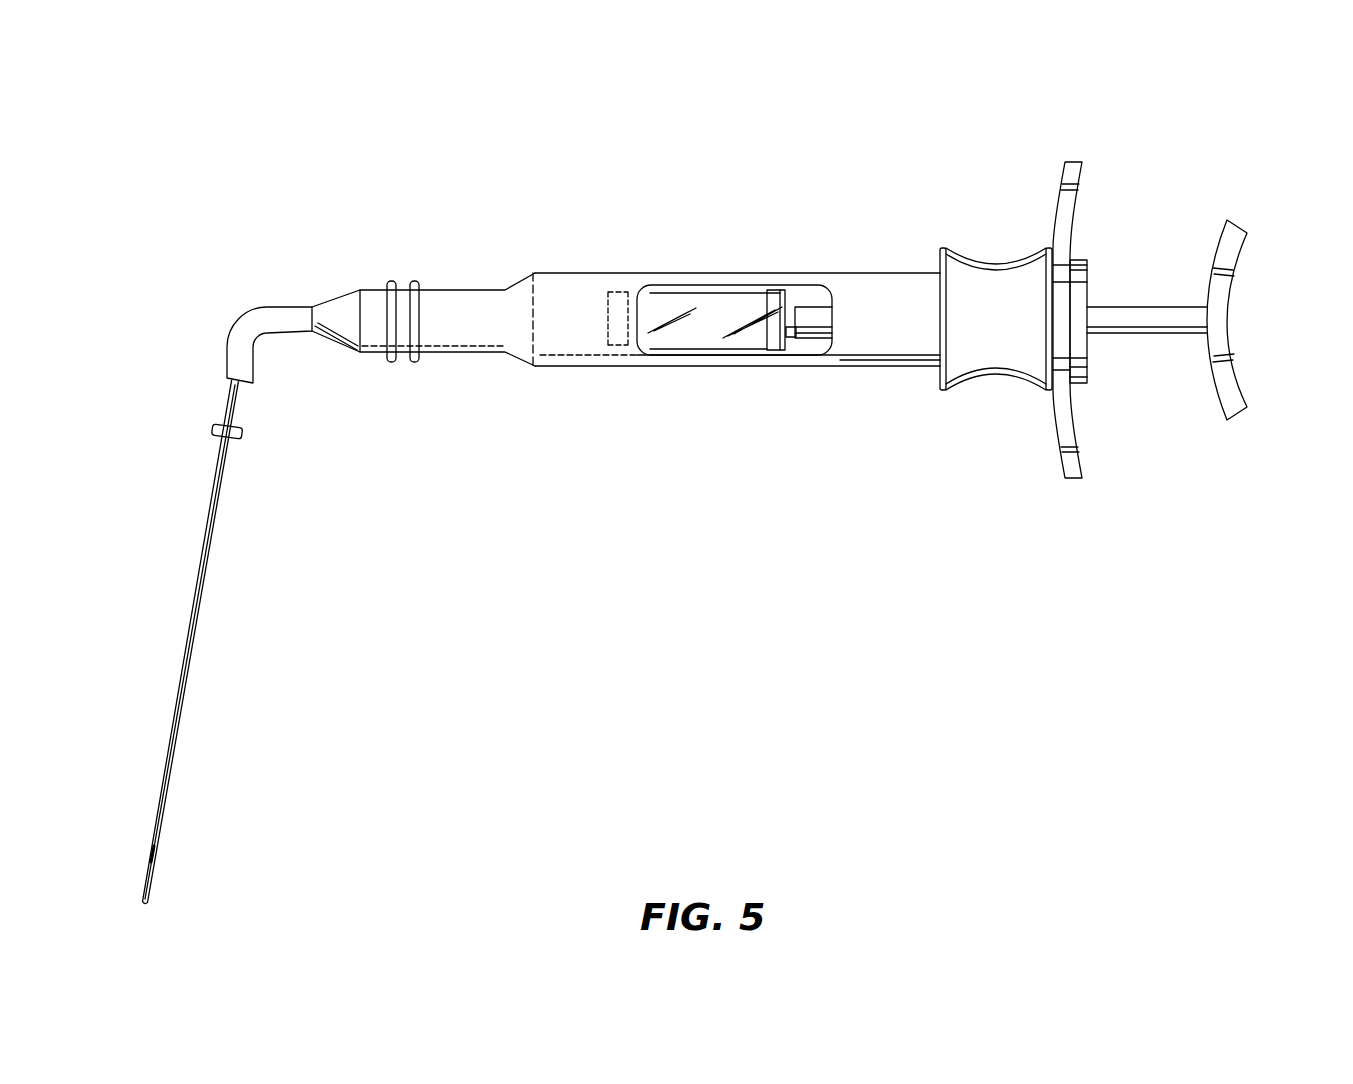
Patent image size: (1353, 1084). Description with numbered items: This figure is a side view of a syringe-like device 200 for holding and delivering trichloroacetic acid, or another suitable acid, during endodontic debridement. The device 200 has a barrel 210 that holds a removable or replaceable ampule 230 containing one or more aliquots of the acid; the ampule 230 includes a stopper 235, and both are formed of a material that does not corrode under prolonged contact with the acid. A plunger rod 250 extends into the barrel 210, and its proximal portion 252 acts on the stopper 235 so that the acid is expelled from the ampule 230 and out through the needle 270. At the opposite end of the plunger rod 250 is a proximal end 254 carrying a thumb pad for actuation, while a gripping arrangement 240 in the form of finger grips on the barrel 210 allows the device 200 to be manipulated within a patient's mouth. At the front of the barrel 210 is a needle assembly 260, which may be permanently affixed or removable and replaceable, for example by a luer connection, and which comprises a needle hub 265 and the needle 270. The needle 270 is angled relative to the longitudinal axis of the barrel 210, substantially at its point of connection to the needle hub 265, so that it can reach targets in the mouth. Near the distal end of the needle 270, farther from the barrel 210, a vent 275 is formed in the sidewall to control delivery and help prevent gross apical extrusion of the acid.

The device 200 is at (500, 137).
The barrel 210 is at (585, 273).
The ampule 230 is at (702, 337).
The stopper 235 is at (777, 344).
The gripping arrangement 240 is at (1082, 176).
The plunger rod 250 is at (1140, 307).
The proximal portion of plunger rod 252 is at (813, 300).
The proximal end of plunger 254 is at (1230, 352).
The needle assembly 260 is at (233, 278).
The needle hub 265 is at (375, 355).
The needle 270 is at (198, 617).
The vent 275 is at (150, 860).